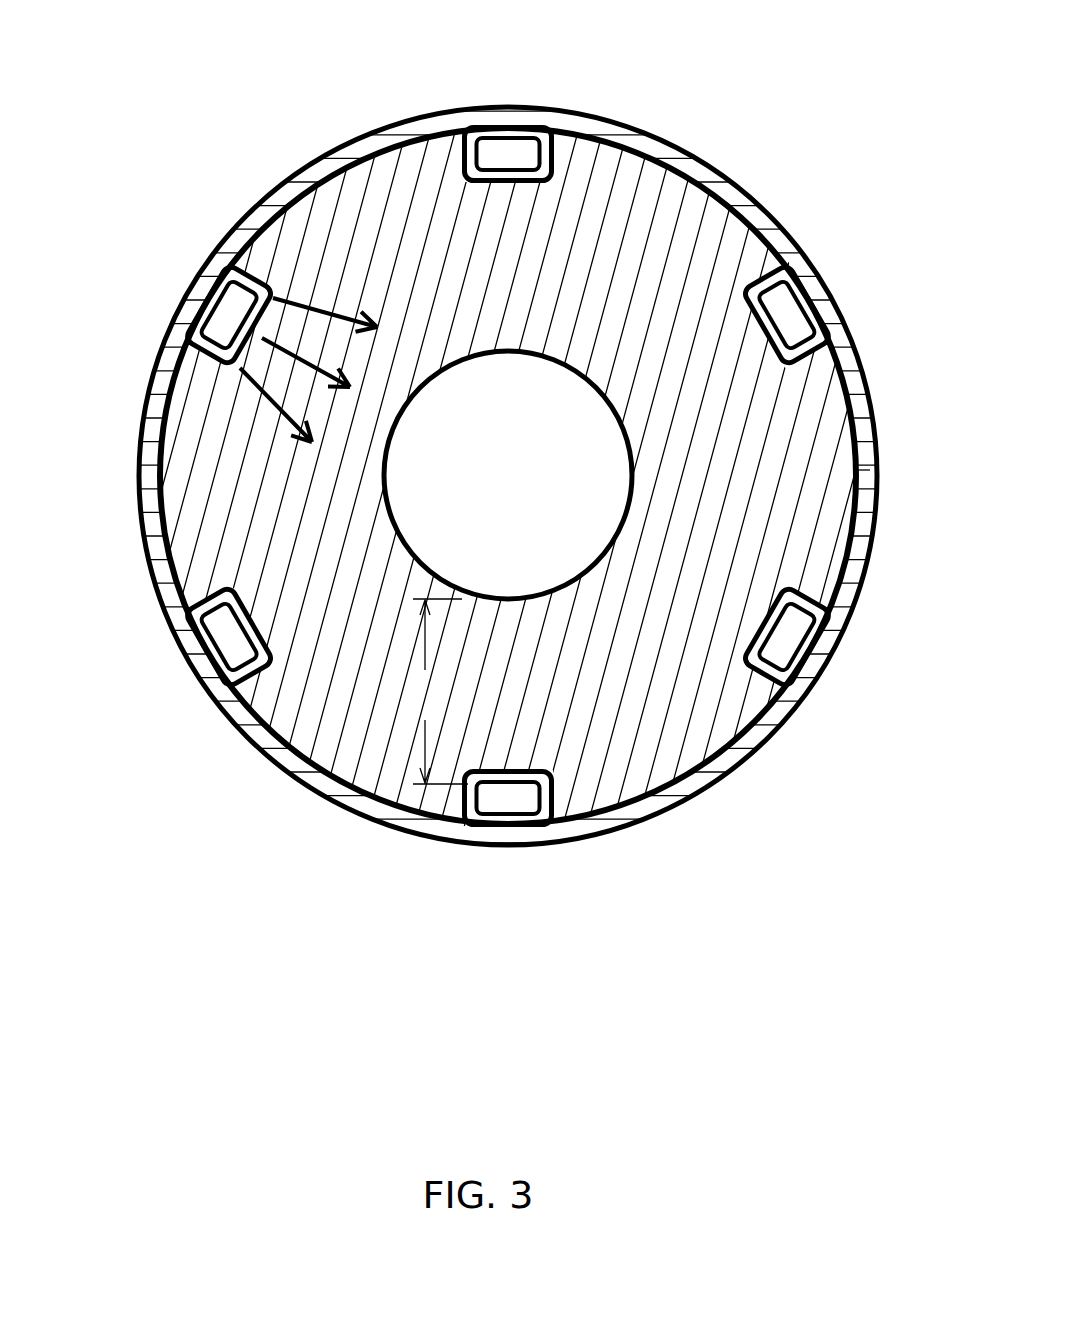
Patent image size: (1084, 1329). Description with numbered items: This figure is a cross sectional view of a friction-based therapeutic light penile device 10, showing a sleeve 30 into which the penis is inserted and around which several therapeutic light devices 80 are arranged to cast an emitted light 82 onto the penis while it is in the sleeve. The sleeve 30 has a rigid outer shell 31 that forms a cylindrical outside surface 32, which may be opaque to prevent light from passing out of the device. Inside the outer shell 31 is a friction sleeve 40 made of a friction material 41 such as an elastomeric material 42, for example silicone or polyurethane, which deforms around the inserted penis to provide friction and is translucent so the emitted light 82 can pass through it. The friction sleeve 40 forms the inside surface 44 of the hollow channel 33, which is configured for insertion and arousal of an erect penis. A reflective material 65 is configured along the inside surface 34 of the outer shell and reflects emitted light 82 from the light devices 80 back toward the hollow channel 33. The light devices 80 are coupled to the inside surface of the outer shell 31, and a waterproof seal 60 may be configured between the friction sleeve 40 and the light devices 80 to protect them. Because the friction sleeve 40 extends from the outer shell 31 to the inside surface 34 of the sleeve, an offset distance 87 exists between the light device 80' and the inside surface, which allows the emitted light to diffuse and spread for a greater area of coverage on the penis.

The friction-based therapeutic light penile device 10 is at (245, 97).
The sleeve 30 is at (707, 177).
The outer shell 31 is at (743, 200).
The outside surface 32 is at (633, 120).
The hollow channel 33 is at (473, 393).
The inside surface 34 is at (667, 178).
The friction sleeve 40 is at (793, 240).
The friction material 41 is at (813, 550).
The elastomeric material 42 is at (773, 407).
The inside surface 44 is at (535, 597).
The waterproof seal 60 is at (363, 795).
The reflective material 65 is at (863, 500).
The therapeutic light device 80 is at (157, 315).
The light device 80' is at (508, 874).
The emitted light 82 is at (333, 312).
The offset distance 87 is at (427, 691).